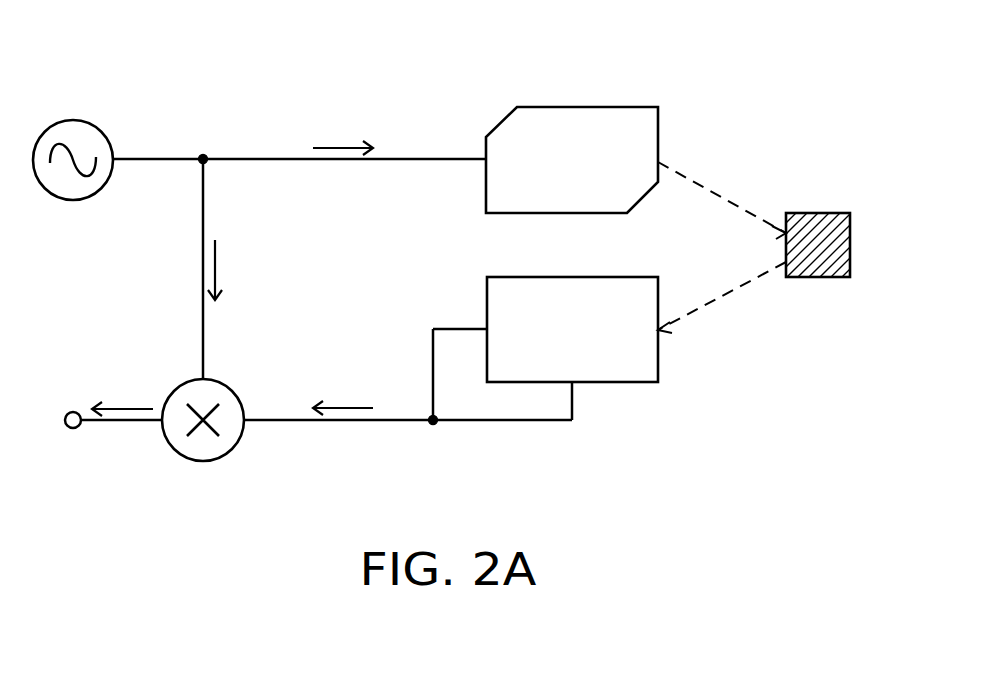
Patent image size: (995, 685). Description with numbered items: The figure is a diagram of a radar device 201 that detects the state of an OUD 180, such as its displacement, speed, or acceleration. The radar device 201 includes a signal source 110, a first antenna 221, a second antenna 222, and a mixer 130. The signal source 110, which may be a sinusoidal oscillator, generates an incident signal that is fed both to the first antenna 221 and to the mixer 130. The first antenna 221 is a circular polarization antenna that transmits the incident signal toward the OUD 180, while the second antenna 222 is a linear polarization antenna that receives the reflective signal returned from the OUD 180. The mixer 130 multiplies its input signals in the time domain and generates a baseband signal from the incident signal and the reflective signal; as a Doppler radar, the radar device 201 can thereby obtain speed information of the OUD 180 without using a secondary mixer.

The radar device 201 is at (222, 44).
The signal source 110 is at (72, 120).
The mixer 130 is at (203, 461).
The first antenna 221 is at (517, 107).
The second antenna 222 is at (487, 277).
The OUD 180 is at (816, 213).